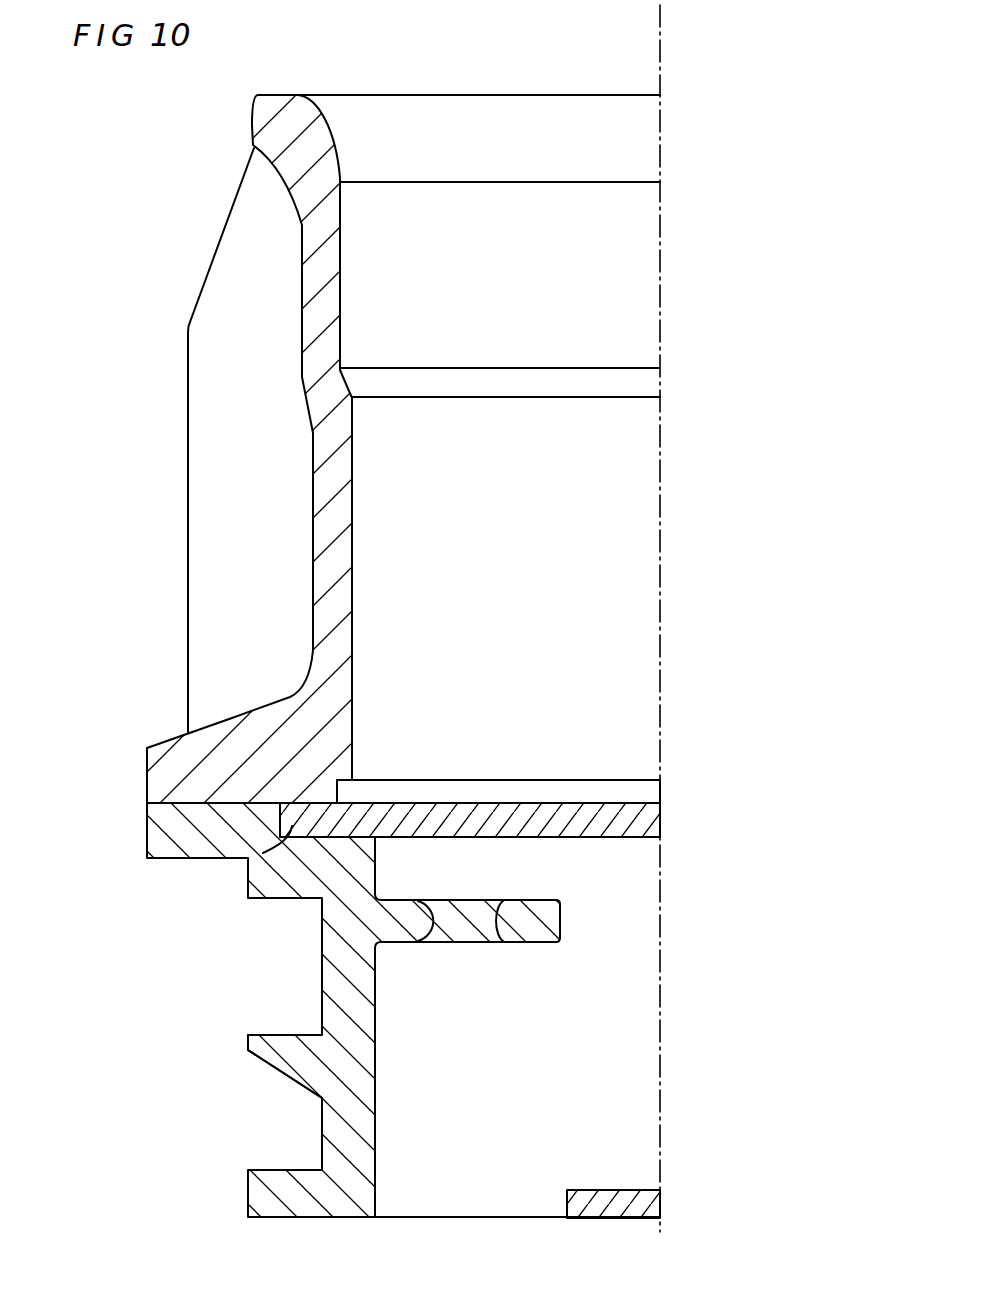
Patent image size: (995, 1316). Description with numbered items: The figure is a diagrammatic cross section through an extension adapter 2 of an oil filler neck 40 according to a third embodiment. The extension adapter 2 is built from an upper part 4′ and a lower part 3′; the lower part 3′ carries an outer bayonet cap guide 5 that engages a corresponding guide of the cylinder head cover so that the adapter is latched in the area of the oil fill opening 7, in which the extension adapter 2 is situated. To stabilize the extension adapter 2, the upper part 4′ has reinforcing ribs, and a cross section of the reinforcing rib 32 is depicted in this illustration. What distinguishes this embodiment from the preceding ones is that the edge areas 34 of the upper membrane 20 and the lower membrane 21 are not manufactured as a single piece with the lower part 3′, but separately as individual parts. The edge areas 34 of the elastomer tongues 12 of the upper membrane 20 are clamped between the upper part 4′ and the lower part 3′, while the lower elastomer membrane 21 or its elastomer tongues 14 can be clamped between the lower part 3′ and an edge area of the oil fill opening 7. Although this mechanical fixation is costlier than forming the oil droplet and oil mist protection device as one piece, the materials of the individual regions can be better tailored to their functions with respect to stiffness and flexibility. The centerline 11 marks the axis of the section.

The extension adapter 2 is at (175, 254).
The lower part 3′ is at (333, 938).
The upper part 4′ is at (324, 519).
The outer bayonet cap guide 5 is at (303, 1072).
The oil fill opening 7 is at (428, 128).
The central axis 11 is at (640, 971).
The elastomer tongues 12 is at (462, 805).
The elastomer tongues 14 is at (584, 1198).
The upper membrane 20 is at (566, 803).
The lower membrane 21 is at (629, 1189).
The reinforcing rib 32 is at (200, 424).
The edge areas 34 is at (263, 853).
The oil filler neck 40 is at (688, 409).